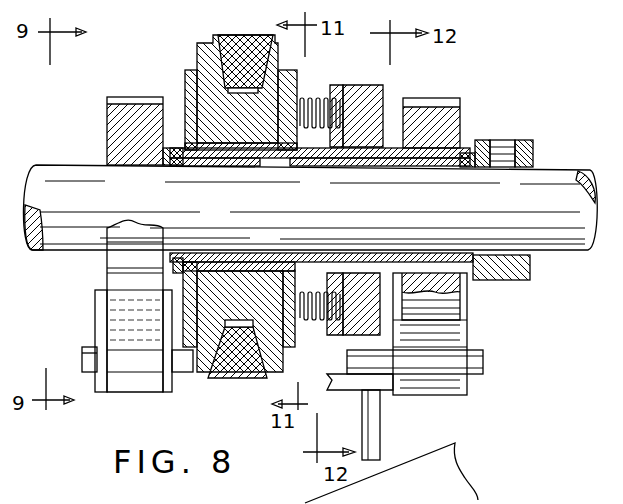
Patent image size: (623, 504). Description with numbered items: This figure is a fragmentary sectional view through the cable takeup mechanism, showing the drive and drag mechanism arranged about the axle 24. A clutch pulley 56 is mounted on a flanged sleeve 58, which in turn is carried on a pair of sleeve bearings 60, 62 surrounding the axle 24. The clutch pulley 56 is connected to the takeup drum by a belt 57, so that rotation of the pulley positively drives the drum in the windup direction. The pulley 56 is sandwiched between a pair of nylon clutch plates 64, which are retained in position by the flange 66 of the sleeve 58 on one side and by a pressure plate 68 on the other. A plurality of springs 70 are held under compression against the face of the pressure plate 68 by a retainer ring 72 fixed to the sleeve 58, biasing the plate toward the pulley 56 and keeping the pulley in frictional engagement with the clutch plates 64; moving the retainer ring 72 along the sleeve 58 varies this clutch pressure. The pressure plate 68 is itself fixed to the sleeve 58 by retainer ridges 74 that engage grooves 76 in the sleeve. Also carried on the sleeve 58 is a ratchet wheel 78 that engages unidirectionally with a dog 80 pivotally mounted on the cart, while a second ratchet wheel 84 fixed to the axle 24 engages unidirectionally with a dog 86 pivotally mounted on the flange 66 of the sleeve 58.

The axle 24 is at (565, 167).
The clutch pulley 56 is at (210, 47).
The belt 57 is at (223, 382).
The flanged sleeve 58 is at (323, 158).
The sleeve bearing 60 is at (227, 163).
The sleeve bearing 62 is at (448, 170).
The nylon clutch plate 64 is at (203, 65).
The flange 66 is at (183, 83).
The pressure plate 68 is at (297, 77).
The spring 70 is at (315, 97).
The retainer ring 72 is at (380, 85).
The retainer ridge 74 is at (293, 262).
The groove 76 is at (370, 262).
The ratchet wheel 78 is at (458, 98).
The dog 80 is at (467, 327).
The second ratchet wheel 84 is at (107, 122).
The dog 86 is at (97, 313).